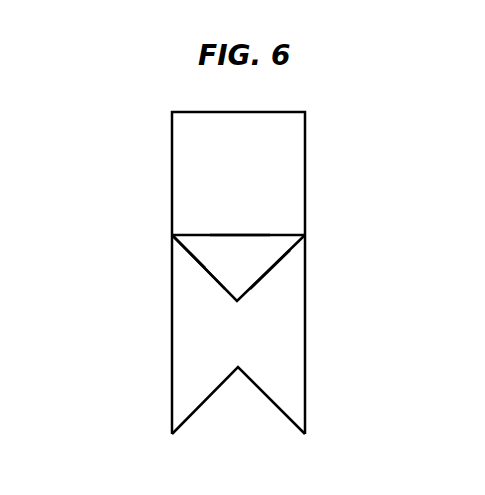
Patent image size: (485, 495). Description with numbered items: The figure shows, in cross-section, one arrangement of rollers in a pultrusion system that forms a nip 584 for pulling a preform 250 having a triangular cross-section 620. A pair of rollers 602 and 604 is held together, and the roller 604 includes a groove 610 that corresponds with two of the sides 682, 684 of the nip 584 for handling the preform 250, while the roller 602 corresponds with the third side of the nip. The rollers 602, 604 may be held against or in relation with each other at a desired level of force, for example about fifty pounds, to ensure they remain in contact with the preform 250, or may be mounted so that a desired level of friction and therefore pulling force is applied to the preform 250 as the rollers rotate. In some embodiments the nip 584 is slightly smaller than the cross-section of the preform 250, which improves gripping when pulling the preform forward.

The roller 602 is at (295, 140).
The roller 604 is at (285, 366).
The preform 250 is at (283, 243).
The groove 610 is at (232, 306).
The triangular cross-section 620 is at (194, 243).
The nip 584 is at (238, 246).
The side of nip 682 is at (202, 287).
The side of nip 684 is at (270, 283).